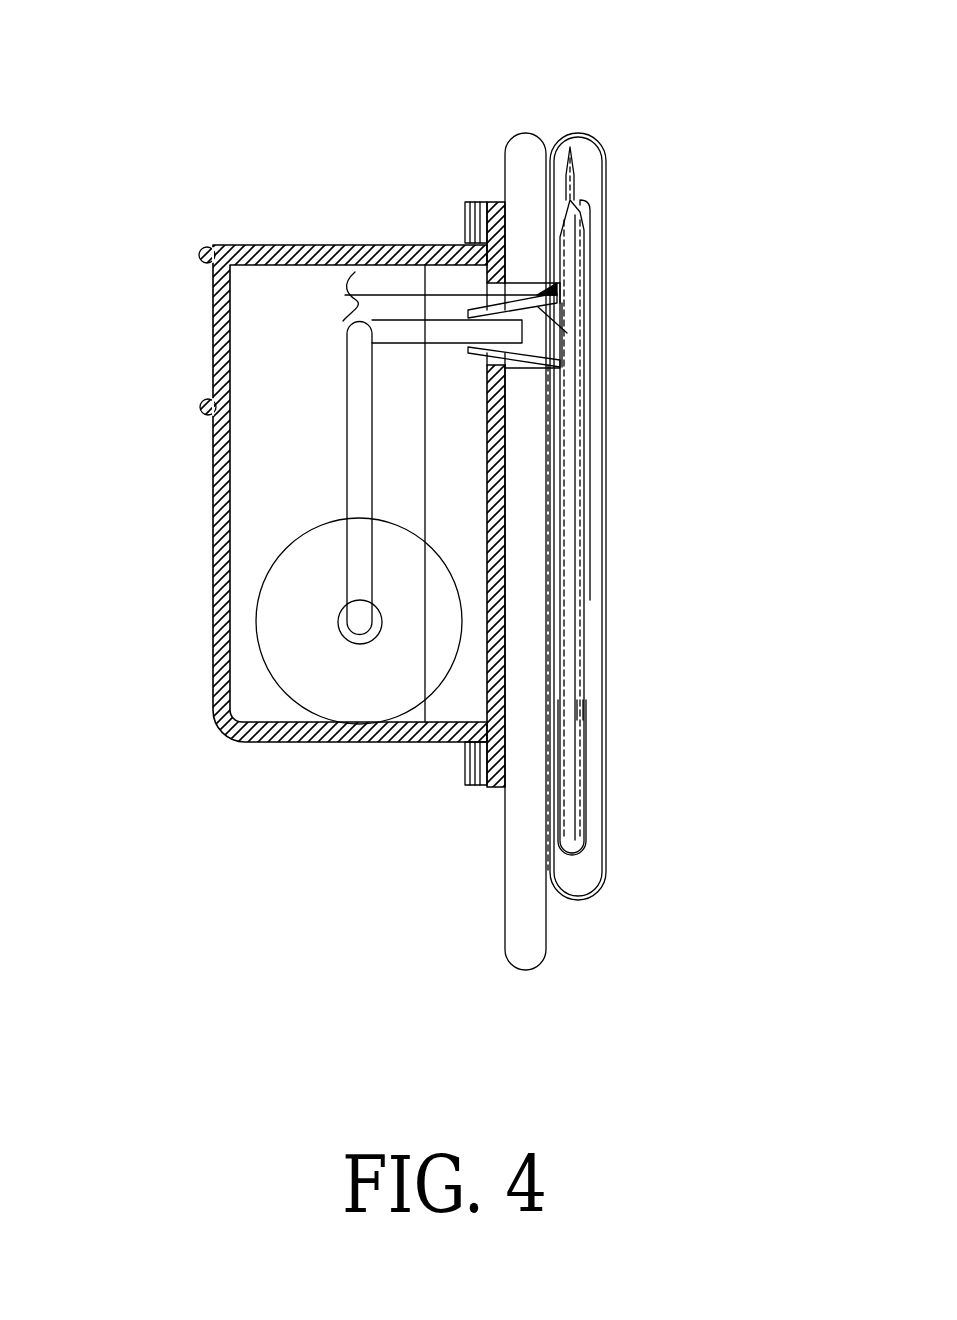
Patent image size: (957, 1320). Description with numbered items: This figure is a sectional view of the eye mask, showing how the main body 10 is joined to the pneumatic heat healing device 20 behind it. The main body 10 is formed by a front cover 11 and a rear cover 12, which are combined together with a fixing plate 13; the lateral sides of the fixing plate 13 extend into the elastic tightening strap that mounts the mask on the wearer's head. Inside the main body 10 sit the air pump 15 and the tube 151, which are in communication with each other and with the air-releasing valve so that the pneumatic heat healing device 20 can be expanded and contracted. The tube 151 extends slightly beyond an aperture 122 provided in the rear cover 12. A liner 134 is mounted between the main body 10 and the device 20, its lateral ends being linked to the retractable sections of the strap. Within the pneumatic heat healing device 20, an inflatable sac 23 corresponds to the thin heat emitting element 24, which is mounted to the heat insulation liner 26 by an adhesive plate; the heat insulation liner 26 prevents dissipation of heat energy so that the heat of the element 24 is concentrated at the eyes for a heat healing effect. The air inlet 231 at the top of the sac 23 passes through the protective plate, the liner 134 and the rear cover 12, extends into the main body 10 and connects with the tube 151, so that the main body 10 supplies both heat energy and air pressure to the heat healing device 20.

The main body 10 is at (203, 230).
The front cover 11 is at (297, 243).
The rear cover 12 is at (437, 243).
The aperture 122 is at (493, 365).
The fixing plate 13 is at (465, 203).
The liner 134 is at (522, 148).
The air pump 15 is at (308, 675).
The tube 151 is at (357, 460).
The pneumatic heat healing device 20 is at (600, 143).
The sac 23 is at (577, 857).
The air inlet 231 is at (578, 335).
The heat emitting element 24 is at (590, 552).
The heat insulation liner 26 is at (580, 723).